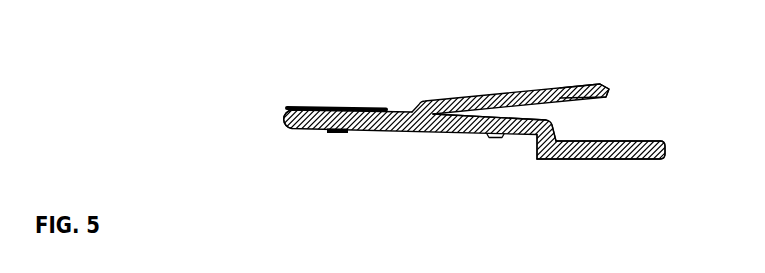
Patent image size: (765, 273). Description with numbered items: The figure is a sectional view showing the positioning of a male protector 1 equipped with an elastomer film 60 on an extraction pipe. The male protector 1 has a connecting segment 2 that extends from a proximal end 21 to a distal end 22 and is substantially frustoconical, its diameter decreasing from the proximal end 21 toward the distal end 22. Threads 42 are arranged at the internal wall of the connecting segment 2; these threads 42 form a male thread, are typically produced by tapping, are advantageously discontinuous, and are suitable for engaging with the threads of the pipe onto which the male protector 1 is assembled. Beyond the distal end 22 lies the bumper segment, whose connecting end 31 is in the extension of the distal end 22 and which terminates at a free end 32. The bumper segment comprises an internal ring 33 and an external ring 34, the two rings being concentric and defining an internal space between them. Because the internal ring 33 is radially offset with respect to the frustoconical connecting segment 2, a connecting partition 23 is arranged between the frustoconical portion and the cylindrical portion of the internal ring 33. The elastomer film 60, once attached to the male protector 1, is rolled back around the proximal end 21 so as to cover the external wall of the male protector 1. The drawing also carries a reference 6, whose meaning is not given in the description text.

The male protector 1 is at (468, 69).
The connecting segment 2 is at (370, 138).
The proximal end 21 is at (284, 116).
The distal end 22 is at (423, 131).
The connecting partition 23 is at (534, 139).
The connecting end 31 is at (419, 103).
The free end 32 is at (626, 134).
The internal ring 33 is at (610, 149).
The external ring 34 is at (544, 82).
The threads 42 is at (503, 145).
The solder layer 6 is at (338, 134).
The elastomer film 60 is at (346, 108).